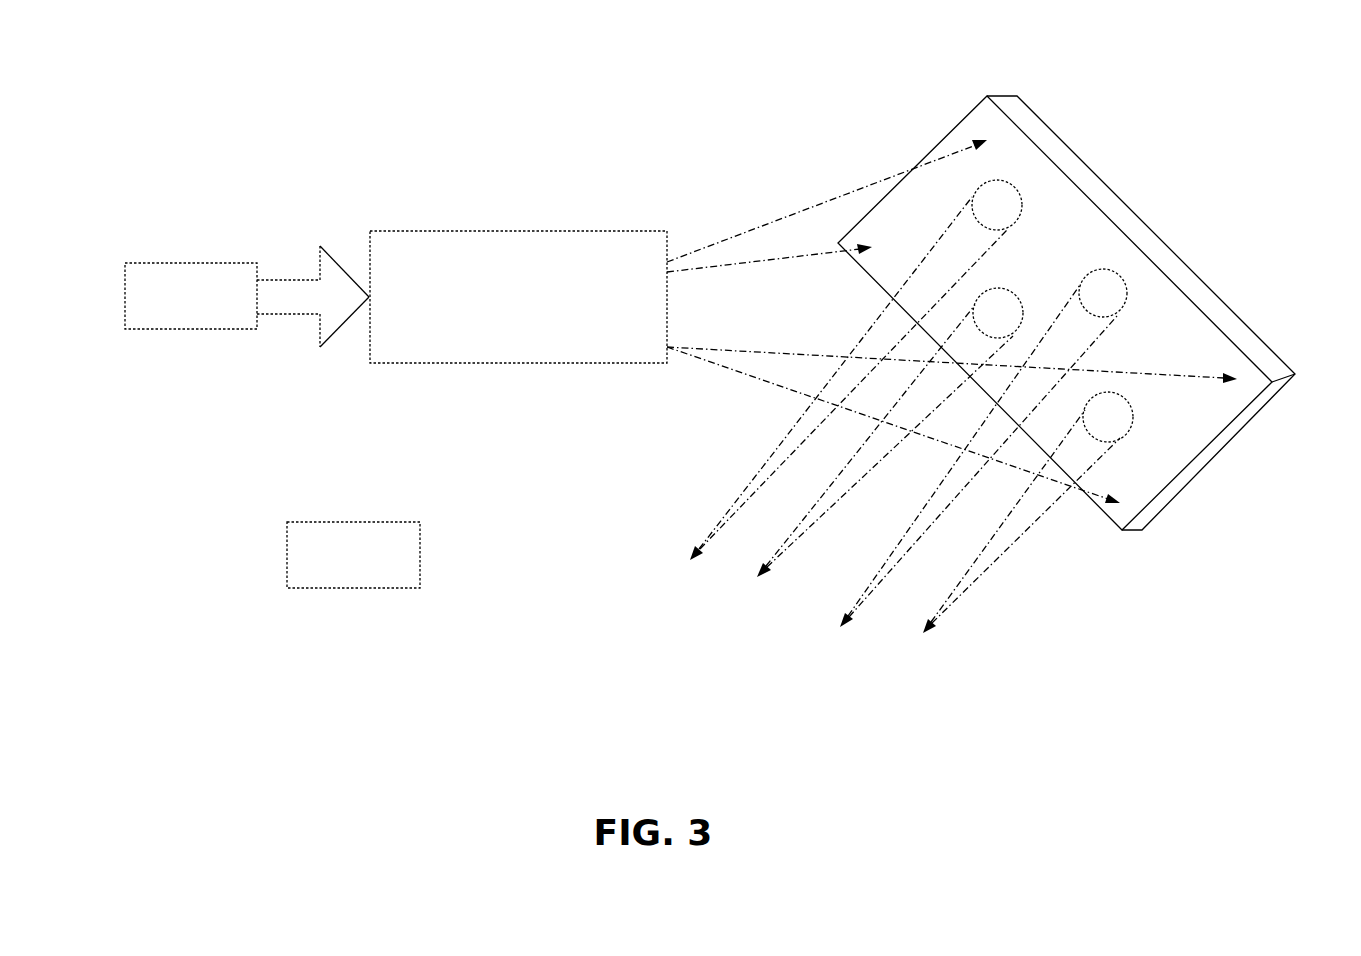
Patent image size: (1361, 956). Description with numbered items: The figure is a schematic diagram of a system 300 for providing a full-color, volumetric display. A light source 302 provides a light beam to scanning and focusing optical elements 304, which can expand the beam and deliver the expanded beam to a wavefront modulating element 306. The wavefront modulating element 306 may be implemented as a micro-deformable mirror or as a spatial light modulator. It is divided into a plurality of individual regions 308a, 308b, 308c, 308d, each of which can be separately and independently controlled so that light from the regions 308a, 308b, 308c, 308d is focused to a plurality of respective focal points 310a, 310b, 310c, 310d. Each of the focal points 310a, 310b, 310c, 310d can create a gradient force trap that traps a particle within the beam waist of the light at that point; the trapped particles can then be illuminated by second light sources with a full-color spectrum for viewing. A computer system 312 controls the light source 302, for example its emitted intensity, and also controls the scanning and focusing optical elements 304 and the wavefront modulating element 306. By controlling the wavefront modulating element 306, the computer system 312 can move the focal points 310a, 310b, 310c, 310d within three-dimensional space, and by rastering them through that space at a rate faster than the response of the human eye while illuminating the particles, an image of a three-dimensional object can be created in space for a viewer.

The system 300 is at (266, 117).
The light source 302 is at (247, 296).
The scanning and focusing optical elements 304 is at (803, 321).
The wavefront modulating element 306 is at (1148, 225).
The individual region 308a is at (1005, 197).
The individual region 308b is at (1003, 308).
The individual region 308c is at (1122, 295).
The individual region 308d is at (1122, 413).
The focal point 310a is at (689, 561).
The focal point 310b is at (757, 578).
The focal point 310c is at (840, 628).
The focal point 310d is at (923, 634).
The computer system 312 is at (353, 555).